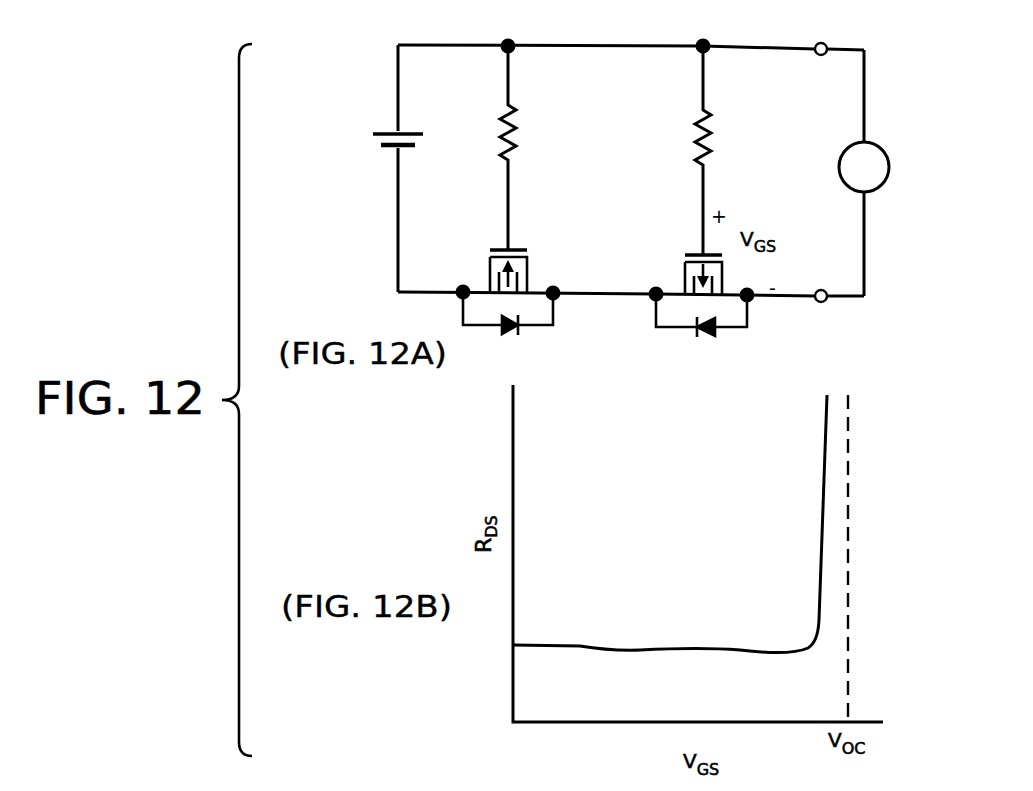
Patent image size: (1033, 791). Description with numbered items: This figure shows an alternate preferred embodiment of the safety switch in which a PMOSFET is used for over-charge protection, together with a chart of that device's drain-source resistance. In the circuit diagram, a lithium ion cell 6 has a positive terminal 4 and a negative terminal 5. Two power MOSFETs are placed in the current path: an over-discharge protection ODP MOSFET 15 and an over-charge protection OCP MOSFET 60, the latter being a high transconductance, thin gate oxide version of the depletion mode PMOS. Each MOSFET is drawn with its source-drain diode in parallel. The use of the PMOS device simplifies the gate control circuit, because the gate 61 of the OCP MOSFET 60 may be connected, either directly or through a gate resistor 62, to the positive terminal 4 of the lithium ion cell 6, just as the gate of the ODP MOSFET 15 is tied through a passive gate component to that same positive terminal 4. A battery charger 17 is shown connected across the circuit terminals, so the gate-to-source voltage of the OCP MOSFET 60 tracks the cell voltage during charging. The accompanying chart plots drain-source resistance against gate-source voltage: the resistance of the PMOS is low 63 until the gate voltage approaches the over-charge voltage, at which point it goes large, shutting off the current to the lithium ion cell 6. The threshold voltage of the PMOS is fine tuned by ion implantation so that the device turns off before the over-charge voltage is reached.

In FIG. 12A, the positive terminal 4 is at (408, 132).
In FIG. 12A, the negative terminal 5 is at (406, 147).
In FIG. 12A, the lithium ion cell 6 is at (386, 164).
In FIG. 12A, the ODP MOSFET 15 is at (538, 274).
In FIG. 12A, the battery charger 17 is at (838, 167).
In FIG. 12A, the OCP MOSFET 60 is at (679, 262).
In FIG. 12A, the gate 61 is at (688, 252).
In FIG. 12A, the gate resistor 62 is at (712, 126).
In FIG. 12B, the low drain-source resistance 63 is at (607, 650).